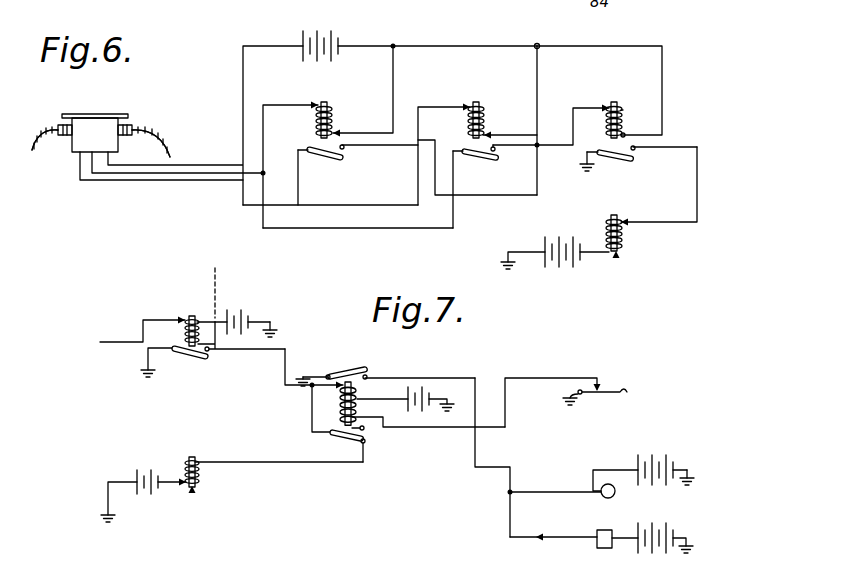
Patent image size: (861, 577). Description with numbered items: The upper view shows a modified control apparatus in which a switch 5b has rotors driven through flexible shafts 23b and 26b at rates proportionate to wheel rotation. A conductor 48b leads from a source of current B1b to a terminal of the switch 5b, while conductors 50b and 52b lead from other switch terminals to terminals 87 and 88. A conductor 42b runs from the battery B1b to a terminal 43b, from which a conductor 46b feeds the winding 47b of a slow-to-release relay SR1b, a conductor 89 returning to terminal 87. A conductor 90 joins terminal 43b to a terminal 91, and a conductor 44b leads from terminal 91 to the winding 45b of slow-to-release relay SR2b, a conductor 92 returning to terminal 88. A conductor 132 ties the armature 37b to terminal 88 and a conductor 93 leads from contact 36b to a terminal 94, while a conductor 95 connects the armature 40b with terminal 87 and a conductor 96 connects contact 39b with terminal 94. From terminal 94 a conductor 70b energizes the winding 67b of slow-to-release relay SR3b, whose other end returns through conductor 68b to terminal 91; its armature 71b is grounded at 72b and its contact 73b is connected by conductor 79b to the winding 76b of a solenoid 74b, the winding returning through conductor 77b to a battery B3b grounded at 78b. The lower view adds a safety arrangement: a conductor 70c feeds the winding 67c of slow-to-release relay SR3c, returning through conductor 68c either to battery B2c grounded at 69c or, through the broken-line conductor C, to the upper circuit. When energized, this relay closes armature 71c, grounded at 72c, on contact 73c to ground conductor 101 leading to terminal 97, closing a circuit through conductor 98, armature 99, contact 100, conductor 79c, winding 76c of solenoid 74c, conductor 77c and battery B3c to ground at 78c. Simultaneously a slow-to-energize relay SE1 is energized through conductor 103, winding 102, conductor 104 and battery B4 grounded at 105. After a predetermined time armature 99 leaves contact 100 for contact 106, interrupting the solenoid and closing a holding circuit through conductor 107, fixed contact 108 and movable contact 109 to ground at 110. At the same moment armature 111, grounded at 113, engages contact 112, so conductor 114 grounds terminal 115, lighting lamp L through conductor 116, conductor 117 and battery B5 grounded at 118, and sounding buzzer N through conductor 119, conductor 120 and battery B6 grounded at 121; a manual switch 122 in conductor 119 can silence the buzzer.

In FIG. 6, the switch 5b is at (94, 114).
In FIG. 6, the flexible shaft 23b is at (40, 123).
In FIG. 6, the flexible shaft 26b is at (173, 150).
In FIG. 6, the conductor 52b is at (124, 180).
In FIG. 6, the conductor 50b is at (180, 174).
In FIG. 6, the terminal 87 is at (264, 173).
In FIG. 6, the conductor 48b is at (246, 46).
In FIG. 6, the source of current B1b is at (326, 30).
In FIG. 6, the conductor 42b is at (378, 45).
In FIG. 6, the terminal 43b is at (395, 48).
In FIG. 6, the conductor 90 is at (485, 40).
In FIG. 6, the terminal 91 is at (540, 46).
In FIG. 6, the conductor 44b is at (540, 64).
In FIG. 6, the conductor 68b is at (663, 79).
In FIG. 6, the conductor 46b is at (394, 90).
In FIG. 6, the slow-to-release relay SR1b is at (325, 102).
In FIG. 6, the winding 47b is at (333, 108).
In FIG. 6, the conductor 89 is at (270, 105).
In FIG. 6, the terminal 88 is at (298, 205).
In FIG. 6, the conductor 95 is at (378, 228).
In FIG. 6, the conductor 132 is at (300, 179).
In FIG. 6, the contact 36b is at (347, 156).
In FIG. 6, the armature 37b is at (343, 150).
In FIG. 6, the conductor 92 is at (426, 107).
In FIG. 6, the slow-to-release relay SR2b is at (477, 102).
In FIG. 6, the winding 45b is at (485, 108).
In FIG. 6, the conductor 96 is at (512, 144).
In FIG. 6, the conductor 70b is at (566, 145).
In FIG. 6, the terminal 94 is at (538, 147).
In FIG. 6, the contact 39b is at (495, 151).
In FIG. 6, the armature 40b is at (478, 157).
In FIG. 6, the conductor 93 is at (498, 195).
In FIG. 6, the slow-to-release relay SR3b is at (616, 102).
In FIG. 6, the winding 67b is at (622, 110).
In FIG. 6, the contact 73b is at (636, 149).
In FIG. 6, the armature 71b is at (615, 158).
In FIG. 6, the ground 72b is at (592, 178).
In FIG. 6, the conductor 79b is at (698, 190).
In FIG. 6, the winding 76b is at (623, 236).
In FIG. 6, the solenoid 74b is at (624, 256).
In FIG. 6, the conductor 77b is at (595, 254).
In FIG. 6, the source of current B3b is at (550, 240).
In FIG. 6, the ground 78b is at (514, 272).
In FIG. 7, the conductor 70c is at (137, 329).
In FIG. 7, the slow-to-release relay SR3c is at (190, 325).
In FIG. 7, the winding 67c is at (193, 315).
In FIG. 7, the conductor C is at (218, 268).
In FIG. 7, the source of current B2c is at (248, 312).
In FIG. 7, the ground 69c is at (273, 324).
In FIG. 7, the ground 72c is at (148, 362).
In FIG. 7, the armature 71c is at (191, 355).
In FIG. 7, the contact 73c is at (210, 352).
In FIG. 7, the conductor 68c is at (216, 340).
In FIG. 7, the conductor 101 is at (285, 368).
In FIG. 7, the terminal 97 is at (310, 387).
In FIG. 7, the ground 113 is at (303, 376).
In FIG. 7, the slow-to-energize relay SE1 is at (355, 370).
In FIG. 7, the conductor 103 is at (327, 375).
In FIG. 7, the armature 111 is at (350, 371).
In FIG. 7, the contact 112 is at (368, 376).
In FIG. 7, the conductor 114 is at (413, 378).
In FIG. 7, the battery B4 is at (428, 390).
In FIG. 7, the conductor 104 is at (383, 396).
In FIG. 7, the ground 105 is at (452, 396).
In FIG. 7, the winding 102 is at (344, 406).
In FIG. 7, the conductor 98 is at (312, 420).
In FIG. 7, the armature 99 is at (342, 444).
In FIG. 7, the contact 100 is at (365, 444).
In FIG. 7, the contact 106 is at (365, 430).
In FIG. 7, the conductor 107 is at (474, 430).
In FIG. 7, the terminal 115 is at (508, 493).
In FIG. 7, the fixed contact 108 is at (600, 388).
In FIG. 7, the movable contact 109 is at (606, 394).
In FIG. 7, the ground 110 is at (577, 395).
In FIG. 7, the conductor 116 is at (540, 492).
In FIG. 7, the lamp L is at (616, 493).
In FIG. 7, the conductor 117 is at (597, 470).
In FIG. 7, the battery B5 is at (652, 465).
In FIG. 7, the ground 118 is at (690, 470).
In FIG. 7, the conductor 119 is at (510, 525).
In FIG. 7, the manually operable switch 122 is at (560, 545).
In FIG. 7, the buzzer N is at (602, 530).
In FIG. 7, the conductor 120 is at (630, 539).
In FIG. 7, the battery B6 is at (655, 532).
In FIG. 7, the ground 121 is at (690, 540).
In FIG. 7, the source of current B3c is at (147, 468).
In FIG. 7, the ground 78c is at (106, 498).
In FIG. 7, the conductor 77c is at (175, 484).
In FIG. 7, the winding 76c is at (200, 478).
In FIG. 7, the solenoid 74c is at (196, 490).
In FIG. 7, the conductor 79c is at (343, 463).